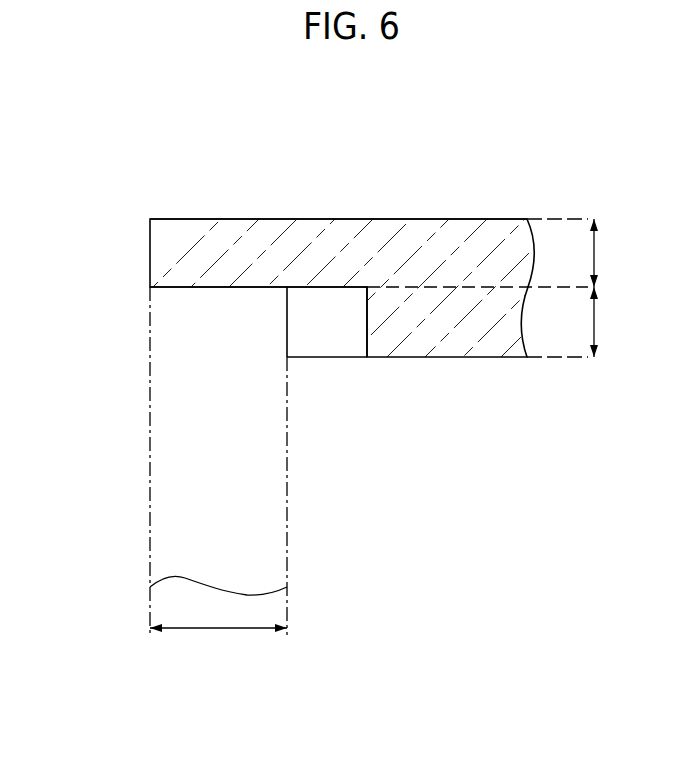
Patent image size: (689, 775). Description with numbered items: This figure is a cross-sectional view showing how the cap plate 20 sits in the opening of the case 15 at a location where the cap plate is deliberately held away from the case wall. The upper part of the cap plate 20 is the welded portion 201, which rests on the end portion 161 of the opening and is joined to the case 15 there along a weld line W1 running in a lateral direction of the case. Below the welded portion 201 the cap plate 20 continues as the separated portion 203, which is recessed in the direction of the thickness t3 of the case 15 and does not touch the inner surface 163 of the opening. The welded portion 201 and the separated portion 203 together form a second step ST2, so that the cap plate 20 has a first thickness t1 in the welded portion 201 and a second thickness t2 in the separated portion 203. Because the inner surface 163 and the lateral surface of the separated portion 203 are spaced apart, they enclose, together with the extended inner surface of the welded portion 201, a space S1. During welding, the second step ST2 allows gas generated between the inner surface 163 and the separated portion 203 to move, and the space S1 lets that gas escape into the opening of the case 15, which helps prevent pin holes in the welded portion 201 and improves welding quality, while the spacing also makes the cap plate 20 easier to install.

The cap plate 20 is at (450, 240).
The welded portion 201 is at (150, 232).
The end portion 161 is at (229, 287).
The weld line W1 is at (150, 287).
The second step ST2 is at (364, 290).
The space S1 is at (338, 334).
The separated portion 203 is at (367, 330).
The case 15 is at (180, 522).
The inner surface 163 is at (287, 520).
The first thickness t1 is at (607, 253).
The second thickness t2 is at (607, 322).
The thickness t3 is at (218, 642).